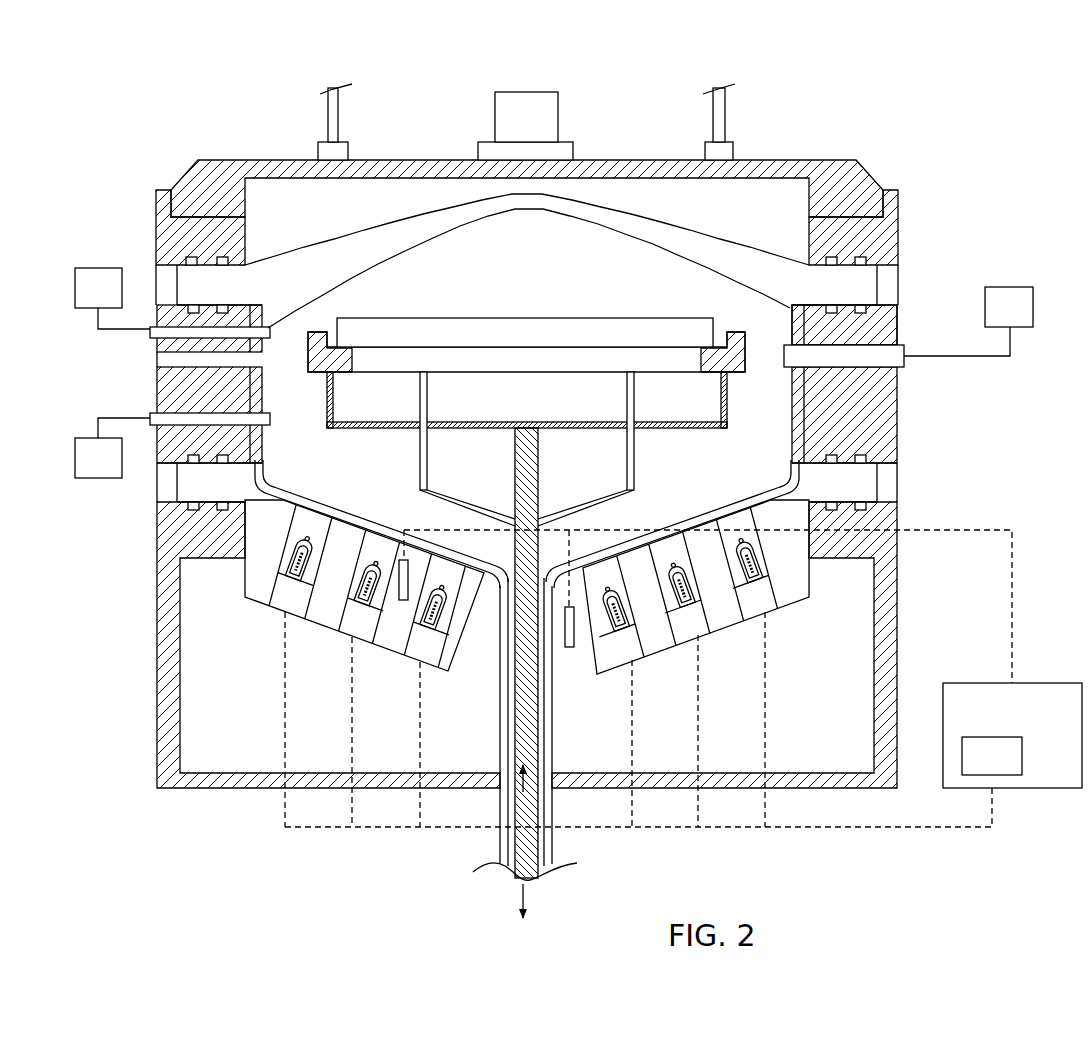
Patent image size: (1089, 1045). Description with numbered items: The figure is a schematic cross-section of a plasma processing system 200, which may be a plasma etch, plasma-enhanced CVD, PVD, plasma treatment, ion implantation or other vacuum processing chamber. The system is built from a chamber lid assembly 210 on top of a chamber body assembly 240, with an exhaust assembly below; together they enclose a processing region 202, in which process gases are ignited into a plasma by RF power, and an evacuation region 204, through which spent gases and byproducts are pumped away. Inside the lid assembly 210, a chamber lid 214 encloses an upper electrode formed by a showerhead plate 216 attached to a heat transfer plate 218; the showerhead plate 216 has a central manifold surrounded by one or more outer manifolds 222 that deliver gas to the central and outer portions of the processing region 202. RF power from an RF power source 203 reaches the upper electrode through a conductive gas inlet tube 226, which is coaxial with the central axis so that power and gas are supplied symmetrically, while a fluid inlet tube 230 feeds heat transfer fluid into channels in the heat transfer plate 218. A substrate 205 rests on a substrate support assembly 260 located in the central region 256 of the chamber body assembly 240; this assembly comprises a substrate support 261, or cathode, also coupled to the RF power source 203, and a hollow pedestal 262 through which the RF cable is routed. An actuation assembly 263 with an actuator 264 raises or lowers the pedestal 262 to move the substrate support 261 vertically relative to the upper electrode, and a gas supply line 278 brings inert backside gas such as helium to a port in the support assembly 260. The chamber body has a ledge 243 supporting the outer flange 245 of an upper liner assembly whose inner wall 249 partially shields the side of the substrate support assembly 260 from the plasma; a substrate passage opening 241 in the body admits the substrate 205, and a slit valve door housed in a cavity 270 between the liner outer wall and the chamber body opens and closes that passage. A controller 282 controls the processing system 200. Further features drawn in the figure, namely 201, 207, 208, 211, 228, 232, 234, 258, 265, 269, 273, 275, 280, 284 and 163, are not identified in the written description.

The plasma processing system 200 is at (906, 46).
The chamber body 201 is at (177, 538).
The processing region 202 is at (284, 595).
The RF power source 203 is at (157, 358).
The evacuation region 204 is at (487, 375).
The substrate 205 is at (626, 390).
The edge ring 207 is at (325, 331).
The substrate support 208 is at (410, 333).
The chamber lid assembly 210 is at (489, 338).
The lower shield 211 is at (421, 386).
The chamber lid 214 is at (360, 517).
The showerhead plate 216 is at (605, 317).
The heat transfer plate 218 is at (560, 117).
The outer manifolds 222 is at (817, 148).
The conductive gas inlet tube 226 is at (727, 112).
The window 228 is at (293, 235).
The fluid inlet tube 230 is at (340, 110).
The shaft 232 is at (538, 465).
The exhaust direction 234 is at (540, 893).
The chamber body assembly 240 is at (404, 602).
The substrate passage opening 241 is at (337, 592).
The ledge 243 is at (447, 672).
The outer flange 245 is at (609, 680).
The inner wall 249 is at (322, 602).
The central region 256 is at (527, 229).
The gap 258 is at (779, 366).
The substrate support assembly 260 is at (892, 338).
The substrate support 261 is at (353, 406).
The hollow pedestal 262 is at (257, 397).
The actuation assembly 263 is at (112, 448).
The actuator 264 is at (157, 424).
The flow path 265 is at (779, 343).
The flow path 269 is at (317, 313).
The cavity 270 is at (219, 357).
The gas source 273 is at (112, 298).
The inlet port 275 is at (157, 327).
The gas supply line 278 is at (900, 360).
The pump 280 is at (968, 321).
The controller 282 is at (683, 678).
The processor 284 is at (992, 756).
The lip 163 is at (788, 481).